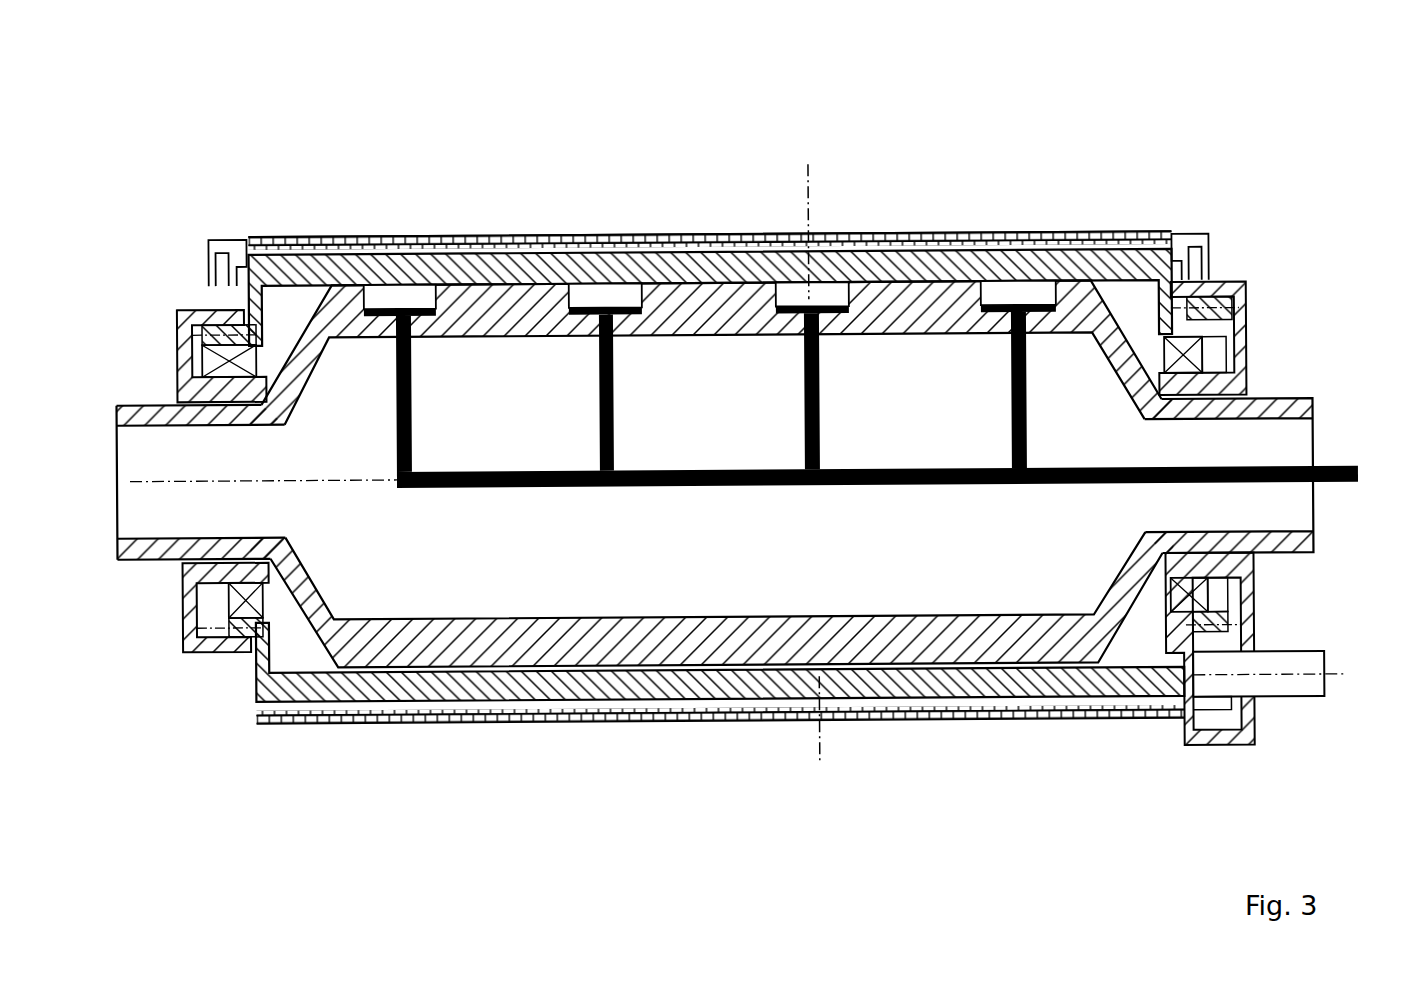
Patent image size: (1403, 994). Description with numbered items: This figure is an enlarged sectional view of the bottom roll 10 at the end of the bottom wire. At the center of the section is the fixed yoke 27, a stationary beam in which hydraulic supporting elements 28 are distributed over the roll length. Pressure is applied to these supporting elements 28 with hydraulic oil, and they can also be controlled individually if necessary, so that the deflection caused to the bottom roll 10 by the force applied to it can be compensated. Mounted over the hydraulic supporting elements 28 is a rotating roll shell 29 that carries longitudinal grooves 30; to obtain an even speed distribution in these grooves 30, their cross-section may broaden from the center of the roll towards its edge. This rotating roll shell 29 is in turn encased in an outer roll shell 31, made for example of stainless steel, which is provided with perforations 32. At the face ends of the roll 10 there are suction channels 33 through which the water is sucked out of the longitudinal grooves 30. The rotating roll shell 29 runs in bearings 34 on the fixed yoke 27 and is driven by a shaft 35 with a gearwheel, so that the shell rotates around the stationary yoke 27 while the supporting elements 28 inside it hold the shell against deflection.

The bottom roll 10 is at (751, 425).
The fixed yoke 27 is at (1262, 405).
The hydraulic supporting elements 28 is at (413, 302).
The rotating roll shell 29 is at (1140, 255).
The longitudinal grooves 30 is at (313, 253).
The roll shell 31 is at (490, 232).
The perforations 32 is at (680, 232).
The suction channels 33 is at (228, 253).
The bearings 34 is at (232, 338).
The shaft 35 is at (1308, 683).